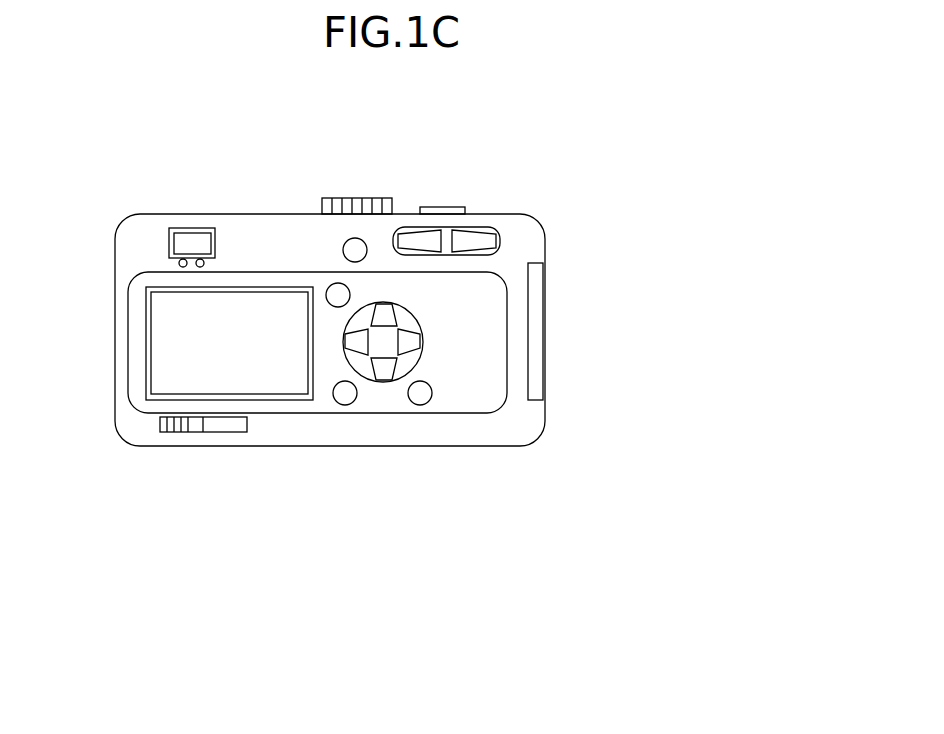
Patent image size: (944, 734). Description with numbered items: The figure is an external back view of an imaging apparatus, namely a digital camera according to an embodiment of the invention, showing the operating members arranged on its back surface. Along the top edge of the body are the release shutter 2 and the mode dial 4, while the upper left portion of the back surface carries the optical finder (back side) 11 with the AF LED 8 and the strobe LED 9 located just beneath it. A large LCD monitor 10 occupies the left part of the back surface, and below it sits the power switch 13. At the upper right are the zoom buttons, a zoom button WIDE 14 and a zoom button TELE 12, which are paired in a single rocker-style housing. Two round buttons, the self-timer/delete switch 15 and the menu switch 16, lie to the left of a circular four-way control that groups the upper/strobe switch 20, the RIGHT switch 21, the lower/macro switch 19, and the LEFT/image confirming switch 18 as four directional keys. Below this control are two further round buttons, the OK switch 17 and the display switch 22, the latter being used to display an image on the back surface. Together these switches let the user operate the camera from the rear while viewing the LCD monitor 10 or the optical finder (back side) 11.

The release shutter 2 is at (700, 105).
The mode dial 4 is at (483, 147).
The AF LED 8 is at (180, 260).
The strobe LED 9 is at (199, 259).
The LCD monitor 10 is at (287, 362).
The optical finder (back side) 11 is at (203, 242).
The zoom button TELE 12 is at (770, 217).
The power switch 13 is at (250, 592).
The zoom button WIDE 14 is at (418, 240).
The self-timer/delete switch 15 is at (840, 289).
The menu switch 16 is at (350, 295).
The OK switch 17 is at (347, 400).
The LEFT/image confirming switch 18 is at (355, 340).
The lower/macro switch 19 is at (663, 516).
The upper/strobe switch 20 is at (385, 312).
The RIGHT switch 21 is at (405, 340).
The display switch 22 is at (770, 460).